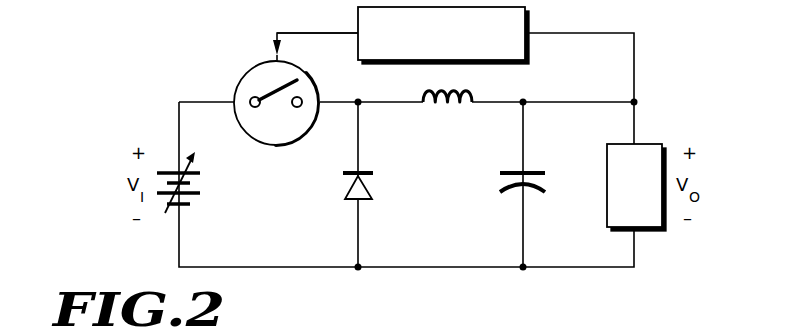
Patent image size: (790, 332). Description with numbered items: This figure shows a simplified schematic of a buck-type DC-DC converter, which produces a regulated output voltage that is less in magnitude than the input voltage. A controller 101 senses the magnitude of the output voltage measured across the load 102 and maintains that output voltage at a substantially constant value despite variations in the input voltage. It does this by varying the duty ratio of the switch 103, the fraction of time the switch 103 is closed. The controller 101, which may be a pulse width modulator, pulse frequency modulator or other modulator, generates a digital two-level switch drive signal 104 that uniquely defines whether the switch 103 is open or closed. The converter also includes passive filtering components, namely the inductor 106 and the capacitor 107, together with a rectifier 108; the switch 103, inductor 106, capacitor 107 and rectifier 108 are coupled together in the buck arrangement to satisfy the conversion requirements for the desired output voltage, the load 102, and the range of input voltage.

The controller 101 is at (527, 52).
The load 102 is at (658, 143).
The switch 103 is at (247, 72).
The switch drive signal 104 is at (322, 33).
The inductor 106 is at (448, 104).
The capacitor 107 is at (538, 167).
The rectifier 108 is at (372, 190).